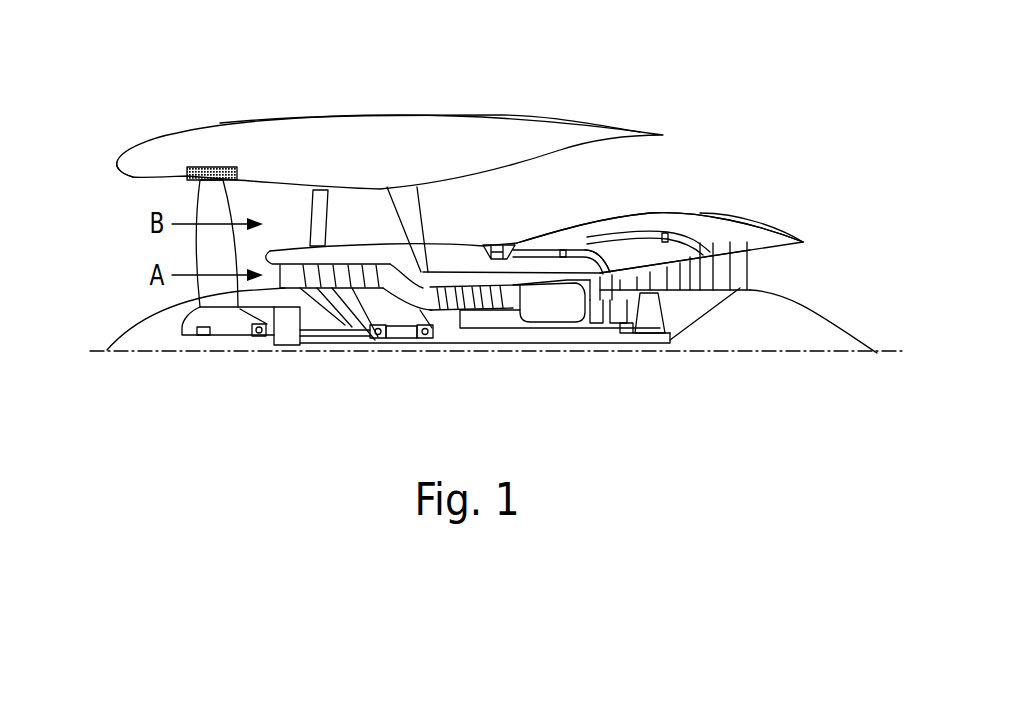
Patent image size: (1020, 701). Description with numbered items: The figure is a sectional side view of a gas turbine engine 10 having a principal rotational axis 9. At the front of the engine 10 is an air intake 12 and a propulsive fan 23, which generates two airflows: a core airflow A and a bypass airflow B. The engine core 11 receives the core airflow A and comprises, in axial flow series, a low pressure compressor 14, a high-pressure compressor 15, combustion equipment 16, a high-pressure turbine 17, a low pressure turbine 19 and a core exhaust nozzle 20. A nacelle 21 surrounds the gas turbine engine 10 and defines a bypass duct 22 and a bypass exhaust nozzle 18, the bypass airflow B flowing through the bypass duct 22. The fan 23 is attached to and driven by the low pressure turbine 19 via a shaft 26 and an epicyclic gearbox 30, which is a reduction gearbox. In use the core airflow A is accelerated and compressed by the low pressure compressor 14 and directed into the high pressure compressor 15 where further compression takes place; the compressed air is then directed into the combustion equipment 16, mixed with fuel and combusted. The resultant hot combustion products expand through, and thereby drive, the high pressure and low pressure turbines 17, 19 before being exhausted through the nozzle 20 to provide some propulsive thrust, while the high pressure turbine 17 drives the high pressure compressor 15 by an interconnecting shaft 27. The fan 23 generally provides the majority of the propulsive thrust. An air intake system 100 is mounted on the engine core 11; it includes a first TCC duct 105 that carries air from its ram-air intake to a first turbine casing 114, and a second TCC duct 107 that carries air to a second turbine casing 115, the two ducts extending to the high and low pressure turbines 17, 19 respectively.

The principal rotational axis 9 is at (777, 353).
The gas turbine engine 10 is at (172, 128).
The engine core 11 is at (567, 242).
The air intake 12 is at (118, 195).
The low pressure compressor 14 is at (352, 258).
The high-pressure compressor 15 is at (480, 297).
The combustion equipment 16 is at (545, 300).
The high-pressure turbine 17 is at (602, 290).
The bypass exhaust nozzle 18 is at (768, 132).
The low pressure turbine 19 is at (727, 282).
The core exhaust nozzle 20 is at (820, 276).
The nacelle 21 is at (403, 117).
The bypass duct 22 is at (655, 174).
The propulsive fan 23 is at (203, 260).
The shaft 26 is at (448, 344).
The interconnecting shaft 27 is at (510, 330).
The epicyclic gearbox 30 is at (288, 345).
The air intake system 100 is at (497, 233).
The first TCC duct 105 is at (583, 249).
The second TCC duct 107 is at (683, 237).
The first turbine casing 114 is at (604, 272).
The second turbine casing 115 is at (614, 290).